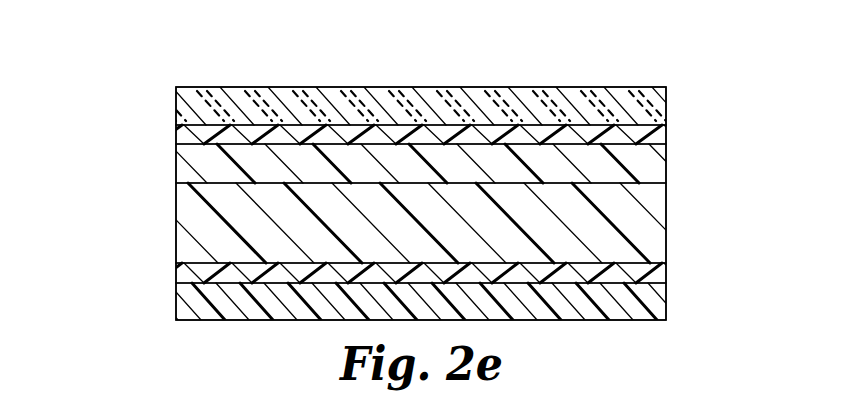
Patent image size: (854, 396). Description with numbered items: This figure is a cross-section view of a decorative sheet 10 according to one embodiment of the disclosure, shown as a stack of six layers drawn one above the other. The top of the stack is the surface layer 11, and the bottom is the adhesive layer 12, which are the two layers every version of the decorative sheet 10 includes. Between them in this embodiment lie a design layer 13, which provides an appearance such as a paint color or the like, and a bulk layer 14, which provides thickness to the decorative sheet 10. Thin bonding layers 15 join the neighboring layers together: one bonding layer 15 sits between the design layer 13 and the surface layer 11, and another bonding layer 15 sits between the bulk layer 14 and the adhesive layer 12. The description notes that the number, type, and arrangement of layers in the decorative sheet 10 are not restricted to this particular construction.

The decorative sheet 10 is at (168, 89).
The surface layer 11 is at (639, 106).
The adhesive layer 12 is at (642, 300).
The design layer 13 is at (652, 175).
The bulk layer 14 is at (648, 225).
The bonding layer 15 is at (665, 129).